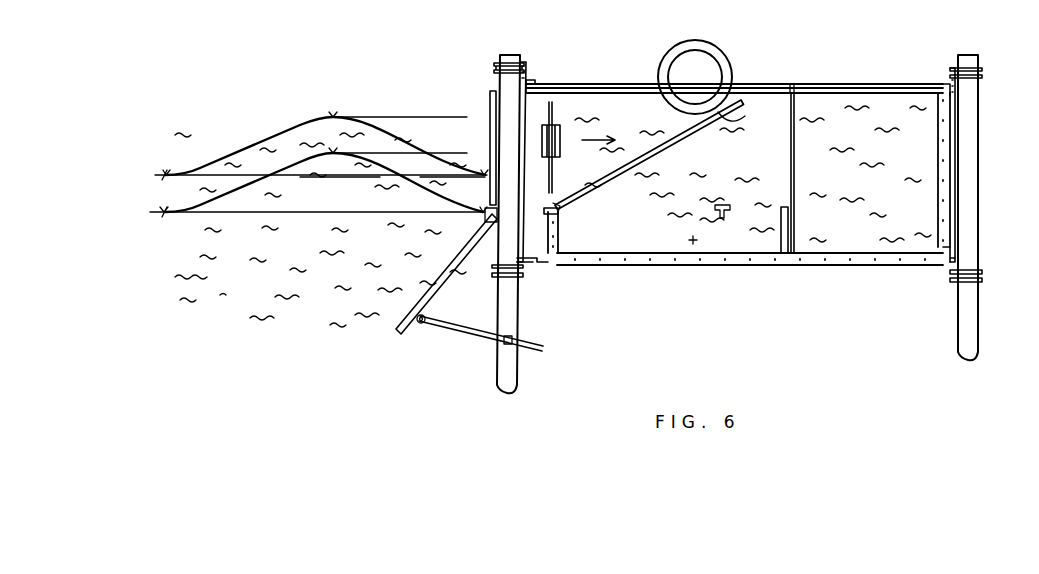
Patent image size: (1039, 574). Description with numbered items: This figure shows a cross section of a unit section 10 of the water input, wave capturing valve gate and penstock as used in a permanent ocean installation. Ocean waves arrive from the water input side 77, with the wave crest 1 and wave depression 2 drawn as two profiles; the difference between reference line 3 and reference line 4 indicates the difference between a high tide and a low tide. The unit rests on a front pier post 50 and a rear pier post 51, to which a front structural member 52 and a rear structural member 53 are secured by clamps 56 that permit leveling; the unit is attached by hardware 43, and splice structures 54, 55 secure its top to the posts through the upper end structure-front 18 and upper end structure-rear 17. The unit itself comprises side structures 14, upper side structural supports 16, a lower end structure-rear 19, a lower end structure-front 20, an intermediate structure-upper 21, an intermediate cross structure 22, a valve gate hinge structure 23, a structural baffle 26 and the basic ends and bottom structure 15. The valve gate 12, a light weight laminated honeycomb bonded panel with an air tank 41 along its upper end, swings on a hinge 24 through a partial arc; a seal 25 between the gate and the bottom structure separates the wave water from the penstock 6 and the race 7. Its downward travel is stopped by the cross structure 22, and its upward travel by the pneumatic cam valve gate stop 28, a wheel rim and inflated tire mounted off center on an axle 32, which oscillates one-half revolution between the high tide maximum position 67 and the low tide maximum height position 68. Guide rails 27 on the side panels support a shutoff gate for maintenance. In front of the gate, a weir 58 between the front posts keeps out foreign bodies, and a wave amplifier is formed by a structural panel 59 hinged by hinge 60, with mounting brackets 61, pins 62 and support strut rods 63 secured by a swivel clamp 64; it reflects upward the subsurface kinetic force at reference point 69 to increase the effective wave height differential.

The ocean wave crest 1 is at (333, 118).
The ocean wave depression 2 is at (163, 176).
The high tide reference line 3 is at (403, 118).
The low tide reference line 4 is at (418, 153).
The penstock 6 is at (866, 185).
The race 7 is at (773, 53).
The unit section of the water input, wave capturing valve gate and penstock 10 is at (774, 266).
The valve gate 12 is at (682, 141).
The side structure 14 is at (793, 205).
The basic ends and bottom structure 15 is at (641, 253).
The upper side structural support 16 is at (864, 85).
The upper end structure-rear 17 is at (938, 97).
The upper end structure-front 18 is at (534, 85).
The lower end structure-rear 19 is at (956, 252).
The lower end structure-front 20 is at (532, 267).
The intermediate structure-upper 21 is at (791, 91).
The intermediate cross structure 22 is at (729, 211).
The valve gate hinge structure 23 is at (558, 229).
The hinge 24 is at (560, 211).
The seal 25 is at (558, 205).
The structural baffle 26 is at (789, 235).
The guide rails 27 is at (560, 143).
The pneumatic cam valve gate stop 28 is at (658, 61).
The axle 32 is at (710, 90).
The air tank 41 is at (718, 129).
The hardware 43 is at (935, 153).
The front pier post 50 is at (518, 377).
The rear pier post 51 is at (975, 157).
The front structural member 52 is at (522, 276).
The rear structural member 53 is at (952, 283).
The splice structure 54 is at (525, 63).
The splice structure 55 is at (950, 71).
The clamp 56 is at (494, 65).
The weir 58 is at (488, 103).
The structural panel 59 is at (440, 270).
The hinge 60 is at (482, 221).
The mounting bracket 61 is at (421, 319).
The pin 62 is at (419, 328).
The support strut rod 63 is at (466, 336).
The swivel clamp 64 is at (512, 331).
The high tide maximum position 67 is at (738, 101).
The low tide maximum height position 68 is at (748, 122).
The subsurface kinetic force reference point 69 is at (332, 264).
The water input side 77 is at (446, 177).